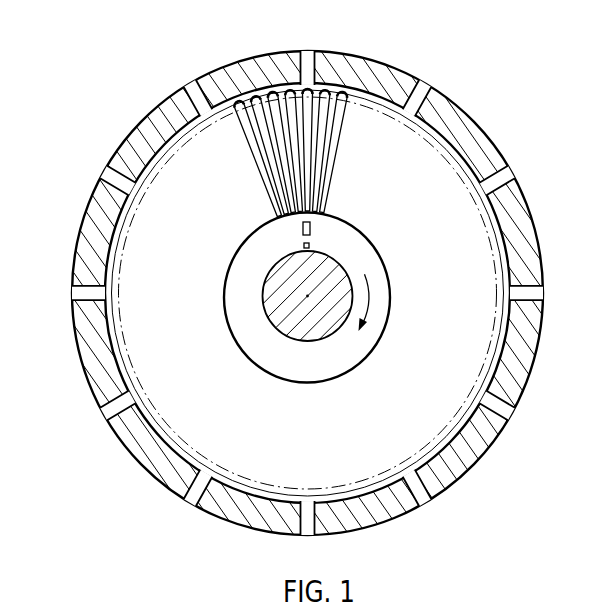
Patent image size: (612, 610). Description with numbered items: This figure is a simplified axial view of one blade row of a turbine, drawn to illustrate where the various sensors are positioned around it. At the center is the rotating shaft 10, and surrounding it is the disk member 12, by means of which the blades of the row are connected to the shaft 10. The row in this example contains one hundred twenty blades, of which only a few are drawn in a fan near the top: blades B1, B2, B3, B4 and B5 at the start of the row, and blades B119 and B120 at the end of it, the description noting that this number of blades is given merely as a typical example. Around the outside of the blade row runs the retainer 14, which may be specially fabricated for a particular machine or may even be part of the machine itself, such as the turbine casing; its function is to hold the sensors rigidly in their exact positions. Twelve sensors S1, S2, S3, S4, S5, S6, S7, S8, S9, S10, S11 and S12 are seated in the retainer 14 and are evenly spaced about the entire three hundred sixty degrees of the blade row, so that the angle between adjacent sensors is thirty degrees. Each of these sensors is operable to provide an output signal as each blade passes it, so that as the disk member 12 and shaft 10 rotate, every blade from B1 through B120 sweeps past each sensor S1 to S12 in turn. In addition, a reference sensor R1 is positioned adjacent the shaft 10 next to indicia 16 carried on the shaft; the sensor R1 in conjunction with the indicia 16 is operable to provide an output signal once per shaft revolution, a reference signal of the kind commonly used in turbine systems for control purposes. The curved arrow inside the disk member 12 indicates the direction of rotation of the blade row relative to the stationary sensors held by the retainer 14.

The sensor S1 is at (309, 62).
The sensor S2 is at (420, 92).
The sensor S3 is at (500, 180).
The sensor S4 is at (535, 299).
The sensor S5 is at (503, 414).
The sensor S6 is at (420, 498).
The sensor S7 is at (306, 537).
The sensor S8 is at (185, 500).
The sensor S9 is at (100, 412).
The sensor S10 is at (75, 295).
The sensor S11 is at (107, 178).
The sensor S12 is at (197, 88).
The retainer 14 is at (474, 122).
The blade B1 is at (310, 107).
The blade B2 is at (290, 108).
The blade B3 is at (280, 130).
The blade B4 is at (272, 155).
The blade B5 is at (263, 178).
The blade B119 is at (332, 148).
The blade B120 is at (320, 130).
The reference sensor R1 is at (302, 228).
The indicia 16 is at (311, 246).
The rotating shaft 10 is at (268, 318).
The disk member 12 is at (262, 368).